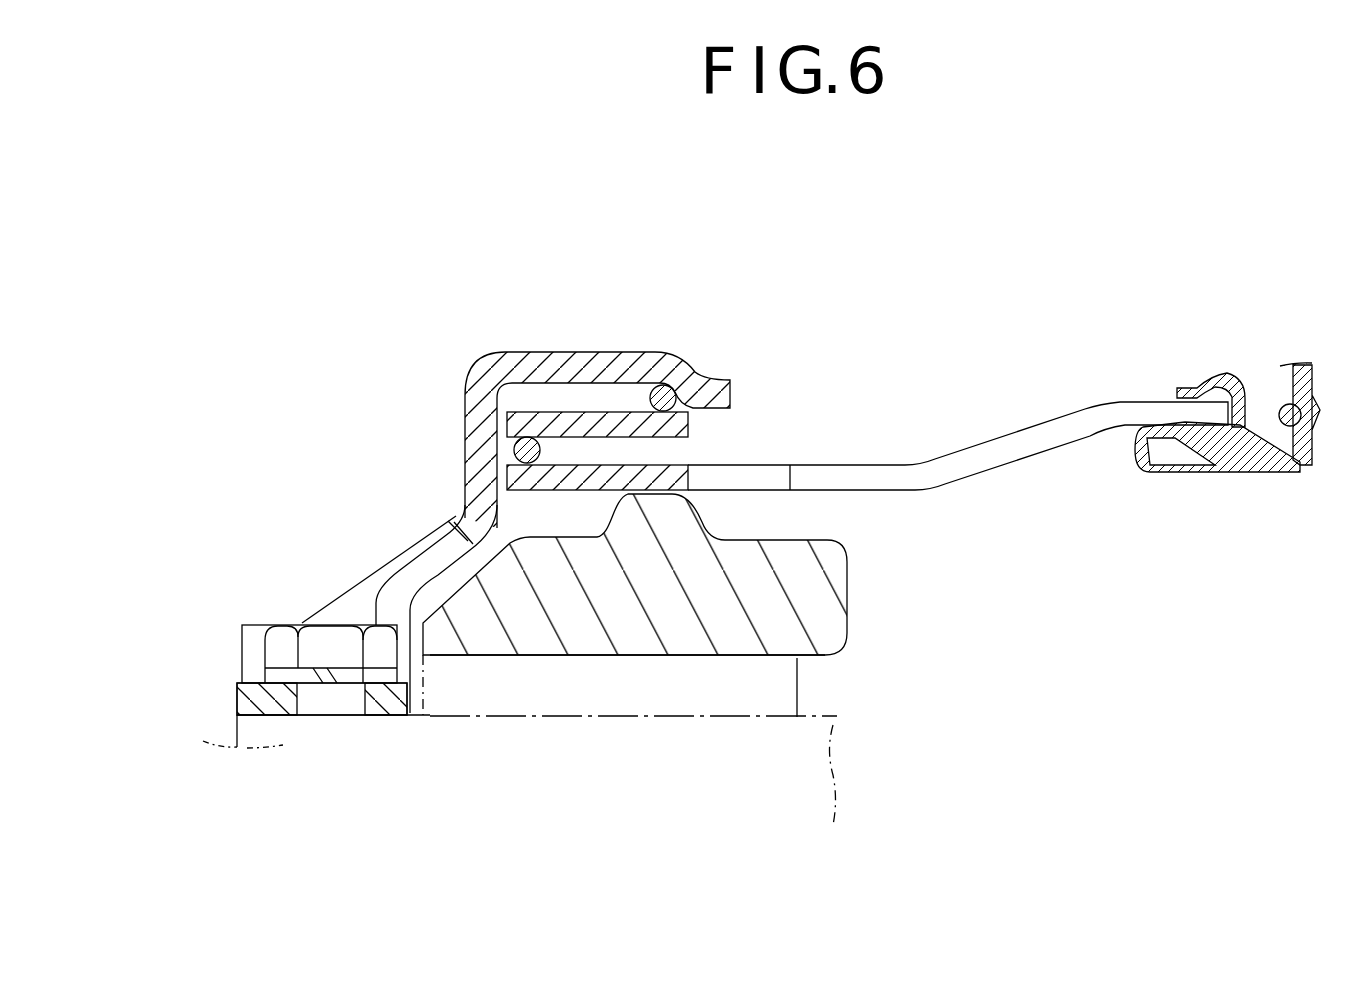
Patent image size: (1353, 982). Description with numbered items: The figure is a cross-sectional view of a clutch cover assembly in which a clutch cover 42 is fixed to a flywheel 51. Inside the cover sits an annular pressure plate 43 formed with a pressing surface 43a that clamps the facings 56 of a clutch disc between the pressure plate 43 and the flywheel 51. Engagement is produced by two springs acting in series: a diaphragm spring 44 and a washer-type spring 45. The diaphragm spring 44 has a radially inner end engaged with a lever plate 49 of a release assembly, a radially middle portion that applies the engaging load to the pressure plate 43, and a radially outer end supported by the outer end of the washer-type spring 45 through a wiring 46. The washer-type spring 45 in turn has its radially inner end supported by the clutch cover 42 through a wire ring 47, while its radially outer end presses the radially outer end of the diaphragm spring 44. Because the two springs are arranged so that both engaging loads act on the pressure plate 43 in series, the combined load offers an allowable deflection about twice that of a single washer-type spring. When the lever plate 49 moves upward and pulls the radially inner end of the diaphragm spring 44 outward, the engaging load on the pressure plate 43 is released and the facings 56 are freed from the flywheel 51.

The clutch cover 42 is at (552, 358).
The pressure plate 43 is at (848, 612).
The pressing surface 43a is at (820, 657).
The diaphragm spring 44 is at (985, 442).
The washer-type spring 45 is at (593, 425).
The wiring 46 is at (513, 449).
The wire ring 47 is at (680, 392).
The lever plate 49 is at (1202, 440).
The flywheel 51 is at (833, 812).
The facings 56 is at (797, 688).